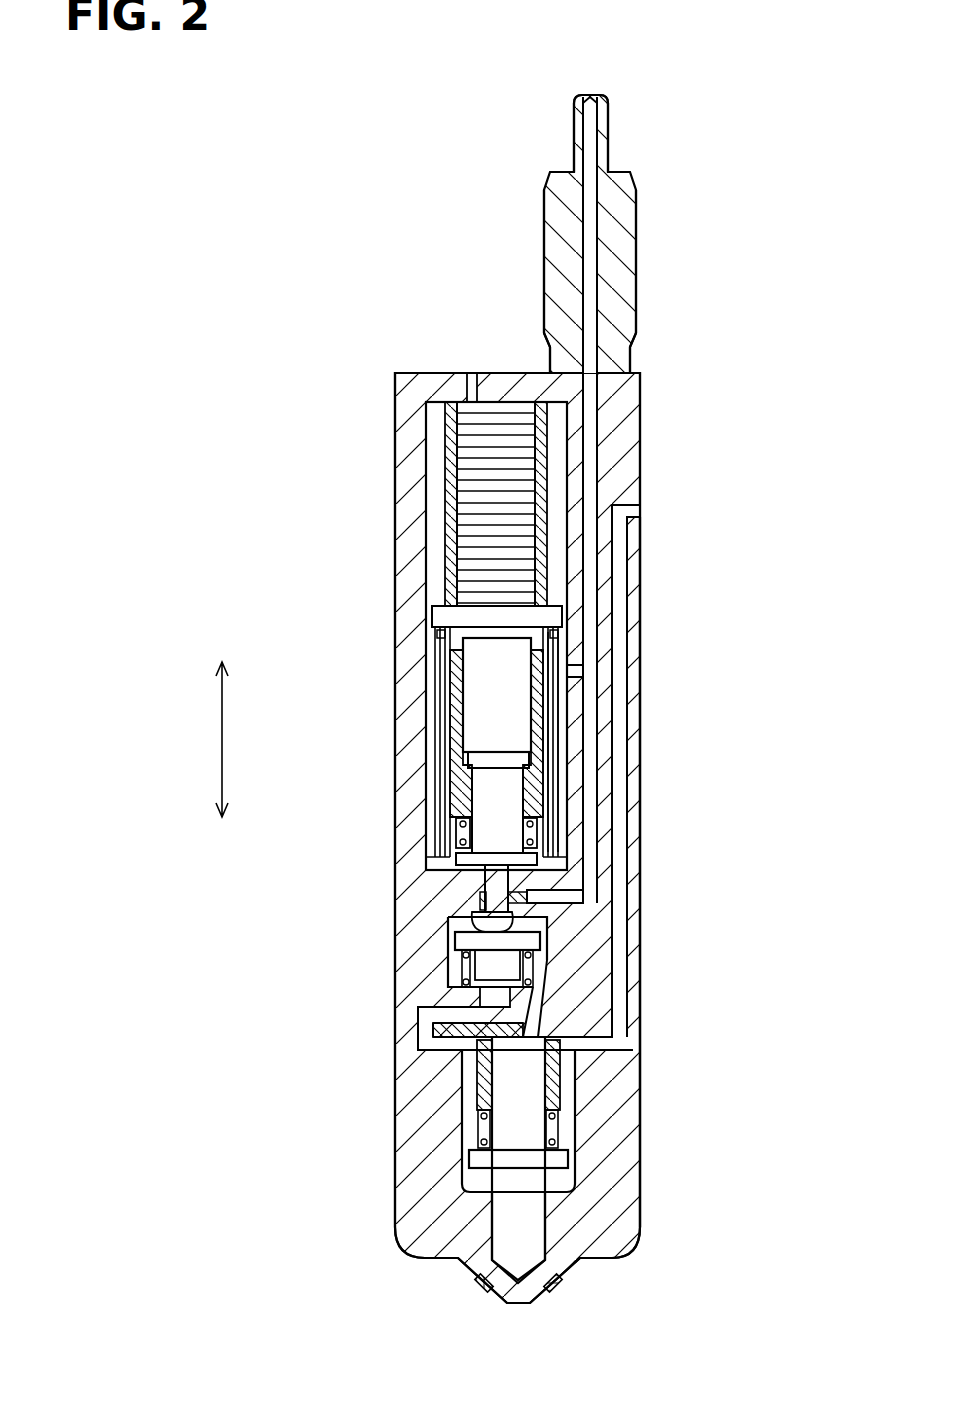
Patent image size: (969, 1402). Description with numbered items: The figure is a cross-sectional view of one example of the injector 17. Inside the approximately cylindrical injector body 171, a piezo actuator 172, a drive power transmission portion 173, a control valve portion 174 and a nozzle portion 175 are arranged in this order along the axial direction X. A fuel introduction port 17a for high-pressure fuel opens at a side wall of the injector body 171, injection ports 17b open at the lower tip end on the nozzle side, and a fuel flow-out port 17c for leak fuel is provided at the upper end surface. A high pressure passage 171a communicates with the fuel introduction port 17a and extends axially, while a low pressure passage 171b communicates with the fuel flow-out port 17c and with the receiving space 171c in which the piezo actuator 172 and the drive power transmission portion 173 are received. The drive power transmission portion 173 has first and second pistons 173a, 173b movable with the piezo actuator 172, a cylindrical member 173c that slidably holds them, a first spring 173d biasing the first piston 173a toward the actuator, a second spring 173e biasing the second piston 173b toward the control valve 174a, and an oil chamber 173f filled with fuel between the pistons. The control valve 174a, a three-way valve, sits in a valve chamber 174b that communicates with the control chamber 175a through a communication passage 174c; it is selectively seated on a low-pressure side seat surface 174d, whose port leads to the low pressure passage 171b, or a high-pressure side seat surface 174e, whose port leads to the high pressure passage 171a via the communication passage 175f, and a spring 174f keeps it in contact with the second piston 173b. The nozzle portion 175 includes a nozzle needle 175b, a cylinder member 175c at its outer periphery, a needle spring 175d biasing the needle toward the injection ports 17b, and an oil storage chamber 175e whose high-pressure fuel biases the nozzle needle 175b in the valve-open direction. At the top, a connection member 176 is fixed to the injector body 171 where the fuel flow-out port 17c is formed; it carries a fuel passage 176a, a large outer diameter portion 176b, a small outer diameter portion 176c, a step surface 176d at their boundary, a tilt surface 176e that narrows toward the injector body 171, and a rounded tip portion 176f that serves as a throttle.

The injector 17 is at (414, 312).
The fuel introduction port 17a is at (632, 512).
The injection ports 17b is at (470, 1280).
The fuel flow-out port 17c is at (606, 348).
The injector body 171 is at (412, 480).
The high pressure passage 171a is at (630, 645).
The low pressure passage 171b is at (607, 412).
The receiving space 171c is at (437, 572).
The piezo actuator 172 is at (455, 522).
The drive power transmission portion 173 is at (430, 734).
The first piston 173a is at (487, 660).
The second piston 173b is at (487, 805).
The cylindrical member 173c is at (455, 690).
The first spring 173d is at (553, 718).
The second spring 173e is at (527, 832).
The oil chamber 173f is at (512, 758).
The control valve portion 174 is at (440, 945).
The control valve 174a is at (497, 893).
The valve chamber 174b is at (455, 958).
The communication passage 174c is at (540, 1000).
The low-pressure side seat surface 174d is at (505, 916).
The high-pressure side seat surface 174e is at (545, 962).
The spring 174f is at (458, 985).
The nozzle portion 175 is at (455, 1082).
The control chamber 175a is at (555, 1070).
The nozzle needle 175b is at (527, 1213).
The cylinder member 175c is at (562, 1090).
The needle spring 175d is at (480, 1130).
The oil storage chamber 175e is at (560, 1124).
The communication passage 175f is at (420, 1040).
The connection member 176 is at (640, 258).
The fuel passage 176a is at (600, 227).
The large outer diameter portion 176b is at (636, 300).
The small outer diameter portion 176c is at (608, 140).
The step surface 176d is at (563, 172).
The tilt surface 176e is at (550, 350).
The tip portion 176f is at (577, 100).
The axial direction X is at (222, 733).